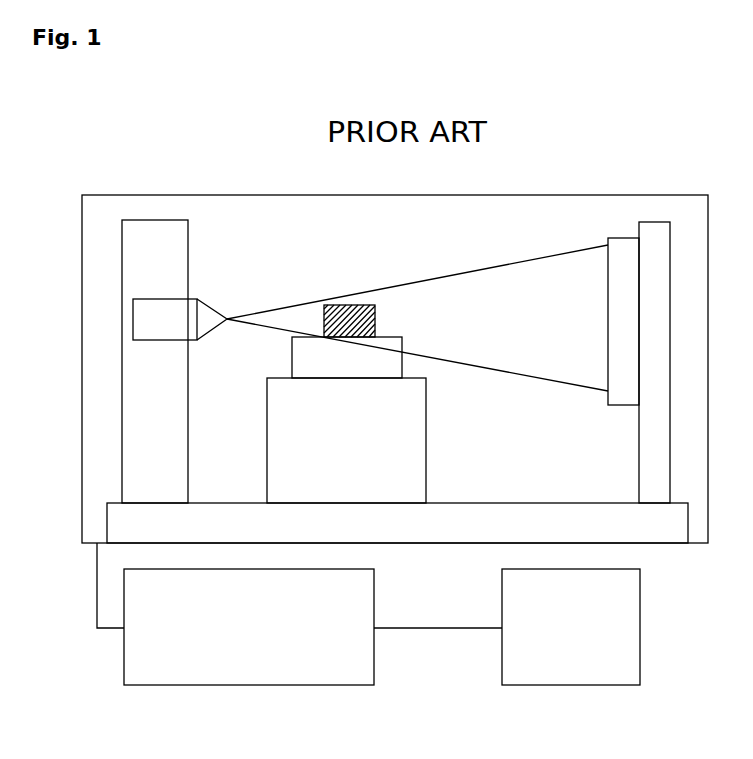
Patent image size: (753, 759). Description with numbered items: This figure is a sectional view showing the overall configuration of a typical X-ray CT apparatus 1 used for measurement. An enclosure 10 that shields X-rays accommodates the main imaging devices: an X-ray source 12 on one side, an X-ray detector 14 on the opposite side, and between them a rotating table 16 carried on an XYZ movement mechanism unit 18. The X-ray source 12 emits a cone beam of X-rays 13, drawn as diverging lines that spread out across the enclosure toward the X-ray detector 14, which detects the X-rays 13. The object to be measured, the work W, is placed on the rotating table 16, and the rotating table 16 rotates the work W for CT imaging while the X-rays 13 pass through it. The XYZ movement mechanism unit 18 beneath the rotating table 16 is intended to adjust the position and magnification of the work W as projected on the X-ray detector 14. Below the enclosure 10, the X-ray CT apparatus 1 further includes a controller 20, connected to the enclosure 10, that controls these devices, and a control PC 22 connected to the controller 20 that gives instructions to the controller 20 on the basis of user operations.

The X-ray CT apparatus 1 is at (395, 328).
The enclosure 10 is at (90, 195).
The X-ray source 12 is at (148, 341).
The X-rays 13 is at (518, 262).
The X-ray detector 14 is at (623, 290).
The work W is at (360, 320).
The rotating table 16 is at (402, 367).
The XYZ movement mechanism unit 18 is at (426, 448).
The controller 20 is at (307, 569).
The control PC 22 is at (593, 569).